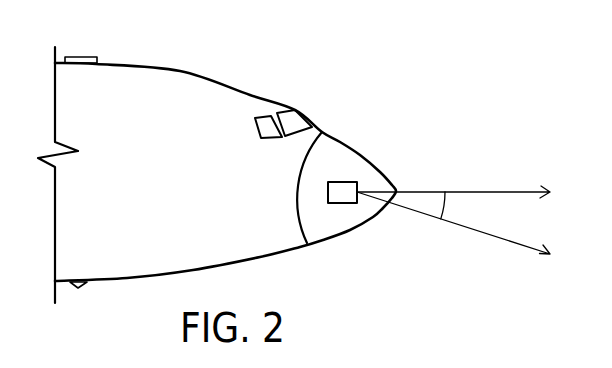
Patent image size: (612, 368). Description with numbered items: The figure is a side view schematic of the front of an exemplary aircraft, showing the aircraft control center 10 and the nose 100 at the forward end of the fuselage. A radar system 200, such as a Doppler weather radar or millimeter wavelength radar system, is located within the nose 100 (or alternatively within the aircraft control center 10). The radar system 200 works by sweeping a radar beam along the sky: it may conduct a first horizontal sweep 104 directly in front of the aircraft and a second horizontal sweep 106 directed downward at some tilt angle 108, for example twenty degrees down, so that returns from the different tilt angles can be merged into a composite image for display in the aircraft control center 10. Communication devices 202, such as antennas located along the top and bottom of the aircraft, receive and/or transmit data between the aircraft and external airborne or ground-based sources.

The aircraft control center 10 is at (102, 78).
The nose 100 is at (323, 148).
The first horizontal sweep 104 is at (523, 190).
The second horizontal sweep 106 is at (492, 233).
The tilt angle 108 is at (448, 192).
The radar system 200 is at (343, 192).
The communication devices 202 is at (82, 56).